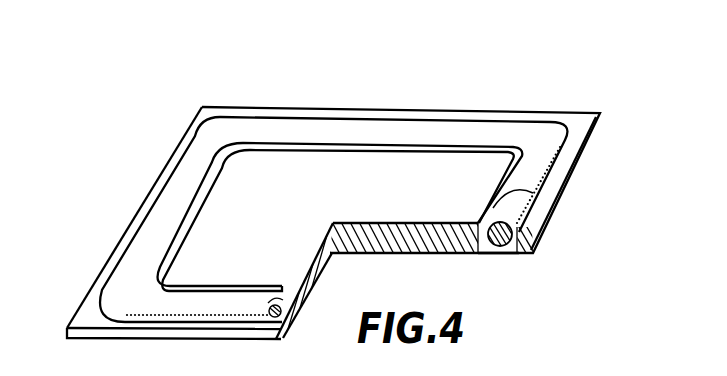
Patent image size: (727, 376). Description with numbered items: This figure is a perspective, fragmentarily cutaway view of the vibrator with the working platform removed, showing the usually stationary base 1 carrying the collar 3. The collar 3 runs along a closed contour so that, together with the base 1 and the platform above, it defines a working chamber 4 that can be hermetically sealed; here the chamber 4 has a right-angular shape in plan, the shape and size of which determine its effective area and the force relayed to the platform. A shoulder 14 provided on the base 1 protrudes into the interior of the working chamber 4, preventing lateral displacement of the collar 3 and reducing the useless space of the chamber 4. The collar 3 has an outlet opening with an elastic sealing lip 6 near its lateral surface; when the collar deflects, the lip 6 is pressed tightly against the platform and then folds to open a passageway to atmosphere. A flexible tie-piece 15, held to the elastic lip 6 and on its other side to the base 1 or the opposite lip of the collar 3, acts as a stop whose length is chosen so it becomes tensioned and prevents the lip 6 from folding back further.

The base 1 is at (102, 317).
The collar 3 is at (520, 233).
The working chamber 4 is at (502, 247).
The elastic sealing lip 6 is at (515, 200).
The shoulder 14 is at (465, 240).
The flexible tie-piece 15 is at (487, 247).